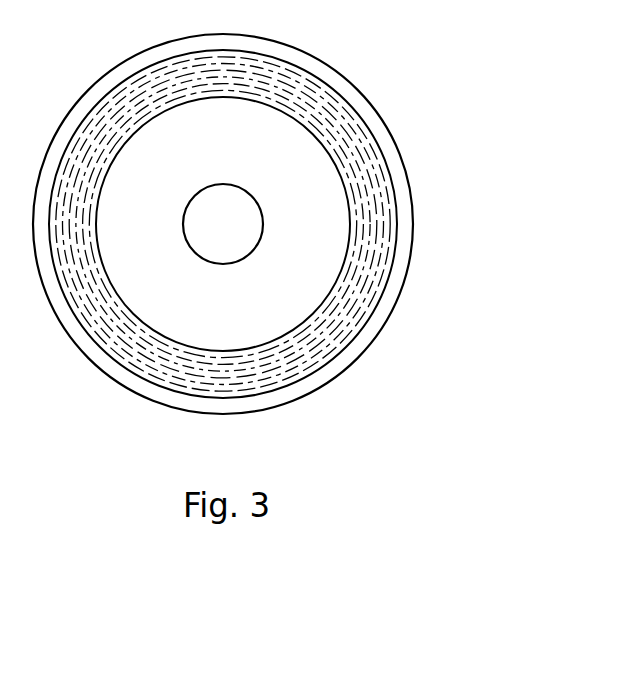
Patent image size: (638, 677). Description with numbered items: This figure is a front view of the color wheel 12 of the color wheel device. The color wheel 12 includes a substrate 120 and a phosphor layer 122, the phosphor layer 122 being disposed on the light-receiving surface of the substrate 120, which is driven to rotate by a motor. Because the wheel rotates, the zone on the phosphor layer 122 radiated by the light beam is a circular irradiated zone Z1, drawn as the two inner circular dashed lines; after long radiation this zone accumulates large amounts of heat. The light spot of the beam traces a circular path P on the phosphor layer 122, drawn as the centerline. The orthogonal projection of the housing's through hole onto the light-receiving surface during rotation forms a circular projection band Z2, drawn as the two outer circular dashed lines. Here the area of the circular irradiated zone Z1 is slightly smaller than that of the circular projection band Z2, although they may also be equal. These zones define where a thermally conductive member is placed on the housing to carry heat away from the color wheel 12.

The color wheel 12 is at (269, 224).
The substrate 120 is at (343, 85).
The phosphor layer 122 is at (270, 224).
The circular irradiated zone Z1 is at (376, 170).
The circular projection band Z2 is at (388, 251).
The circular path P is at (373, 217).